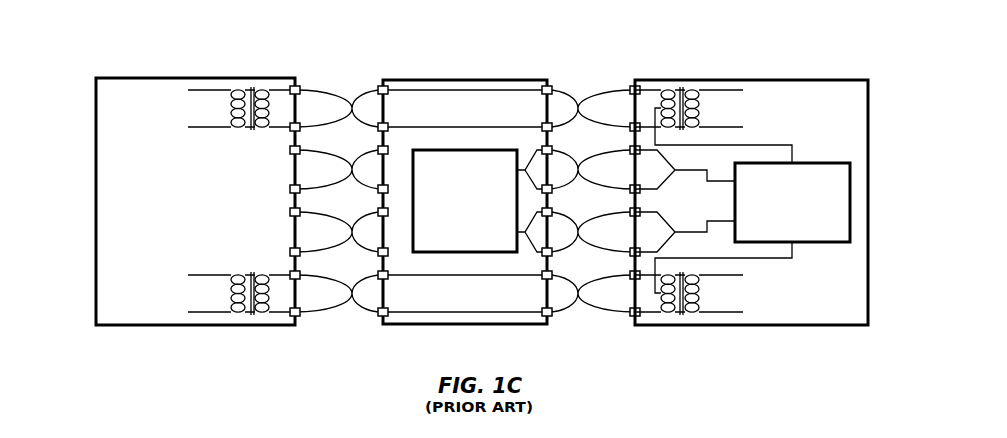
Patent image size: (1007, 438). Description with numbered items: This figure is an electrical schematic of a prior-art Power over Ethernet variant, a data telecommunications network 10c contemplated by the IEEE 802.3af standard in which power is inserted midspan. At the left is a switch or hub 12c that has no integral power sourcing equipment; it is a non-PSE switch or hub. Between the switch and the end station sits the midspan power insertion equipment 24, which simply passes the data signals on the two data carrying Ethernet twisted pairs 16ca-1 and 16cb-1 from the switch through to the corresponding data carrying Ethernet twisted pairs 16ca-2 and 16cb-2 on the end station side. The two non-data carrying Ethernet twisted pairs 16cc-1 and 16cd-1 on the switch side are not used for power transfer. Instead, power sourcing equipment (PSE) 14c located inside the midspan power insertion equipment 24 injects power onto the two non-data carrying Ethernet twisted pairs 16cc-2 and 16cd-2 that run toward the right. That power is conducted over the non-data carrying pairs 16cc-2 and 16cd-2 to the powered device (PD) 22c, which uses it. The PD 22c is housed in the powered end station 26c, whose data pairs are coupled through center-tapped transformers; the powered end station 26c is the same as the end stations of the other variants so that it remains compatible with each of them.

The data telecommunications network 10c is at (586, 52).
The switch or hub 12c is at (268, 77).
The power sourcing equipment (PSE) 14c is at (465, 150).
The data carrying Ethernet twisted pair 16ca-1 is at (300, 89).
The non-data carrying Ethernet twisted pair 16cc-1 is at (300, 149).
The non-data carrying Ethernet twisted pair 16cd-1 is at (300, 211).
The data carrying Ethernet twisted pair 16cb-1 is at (300, 274).
The data carrying Ethernet twisted pair 16ca-2 is at (630, 89).
The non-data carrying Ethernet twisted pair 16cc-2 is at (630, 149).
The non-data carrying Ethernet twisted pair 16cd-2 is at (630, 211).
The data carrying Ethernet twisted pair 16cb-2 is at (630, 274).
The powered device (PD) 22c is at (852, 202).
The midspan power insertion equipment 24 is at (474, 120).
The powered end station 26c is at (868, 298).